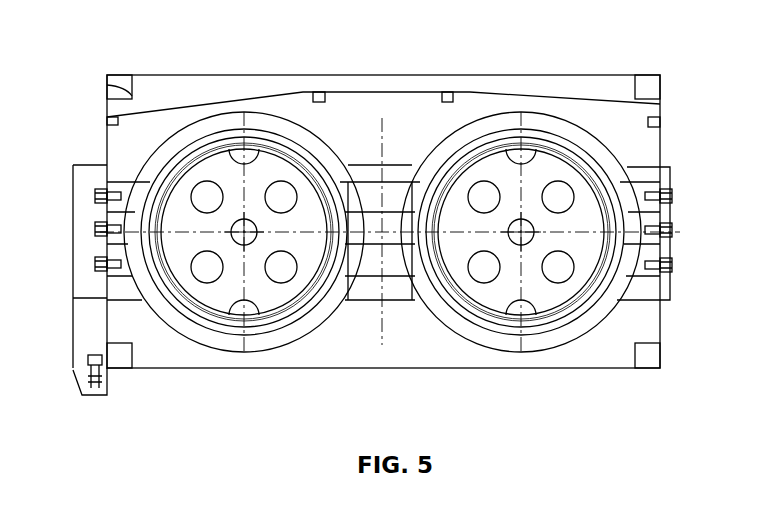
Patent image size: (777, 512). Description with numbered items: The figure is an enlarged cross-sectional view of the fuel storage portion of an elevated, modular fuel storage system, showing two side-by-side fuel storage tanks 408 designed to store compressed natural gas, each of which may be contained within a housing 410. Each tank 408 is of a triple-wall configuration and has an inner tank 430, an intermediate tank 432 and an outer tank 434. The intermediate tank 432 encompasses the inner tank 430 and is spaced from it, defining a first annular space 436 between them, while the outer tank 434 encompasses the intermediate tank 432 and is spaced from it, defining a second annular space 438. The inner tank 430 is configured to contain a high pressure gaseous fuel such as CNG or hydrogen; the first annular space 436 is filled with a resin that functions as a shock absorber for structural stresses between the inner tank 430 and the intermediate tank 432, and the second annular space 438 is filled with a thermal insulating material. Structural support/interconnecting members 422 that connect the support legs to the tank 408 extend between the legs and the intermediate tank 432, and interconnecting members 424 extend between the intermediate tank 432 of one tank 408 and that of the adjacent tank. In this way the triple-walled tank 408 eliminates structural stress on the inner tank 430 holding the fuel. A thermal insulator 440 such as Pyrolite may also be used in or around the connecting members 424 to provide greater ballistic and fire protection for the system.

The fuel storage tank 408 is at (318, 121).
The housing 410 is at (607, 77).
The structural support/interconnecting member 422 is at (82, 279).
The interconnecting member 424 is at (667, 203).
The inner tank 430 is at (207, 143).
The intermediate tank 432 is at (273, 132).
The outer tank 434 is at (141, 154).
The first annular space 436 is at (172, 147).
The second annular space 438 is at (107, 87).
The thermal insulator 440 is at (392, 197).